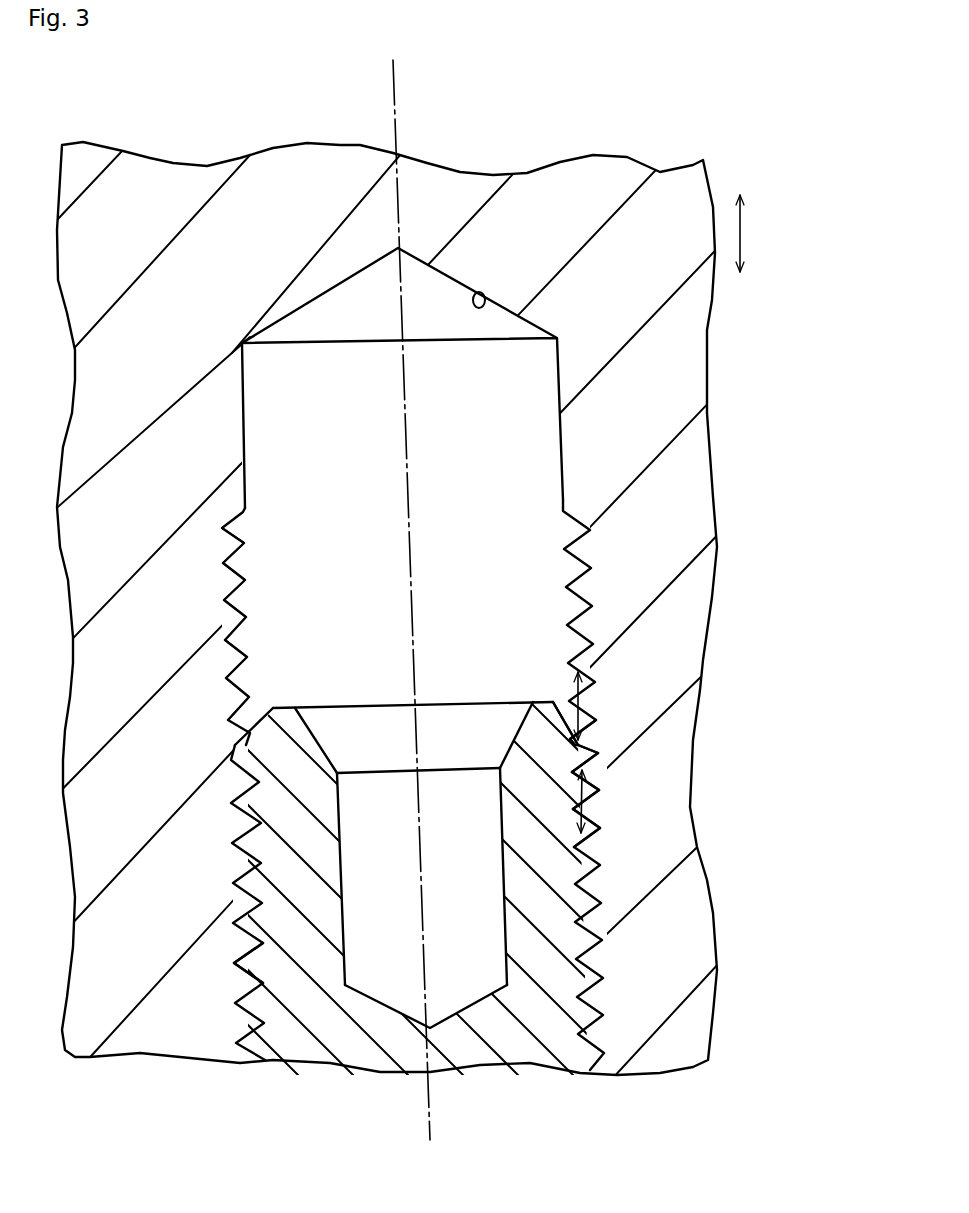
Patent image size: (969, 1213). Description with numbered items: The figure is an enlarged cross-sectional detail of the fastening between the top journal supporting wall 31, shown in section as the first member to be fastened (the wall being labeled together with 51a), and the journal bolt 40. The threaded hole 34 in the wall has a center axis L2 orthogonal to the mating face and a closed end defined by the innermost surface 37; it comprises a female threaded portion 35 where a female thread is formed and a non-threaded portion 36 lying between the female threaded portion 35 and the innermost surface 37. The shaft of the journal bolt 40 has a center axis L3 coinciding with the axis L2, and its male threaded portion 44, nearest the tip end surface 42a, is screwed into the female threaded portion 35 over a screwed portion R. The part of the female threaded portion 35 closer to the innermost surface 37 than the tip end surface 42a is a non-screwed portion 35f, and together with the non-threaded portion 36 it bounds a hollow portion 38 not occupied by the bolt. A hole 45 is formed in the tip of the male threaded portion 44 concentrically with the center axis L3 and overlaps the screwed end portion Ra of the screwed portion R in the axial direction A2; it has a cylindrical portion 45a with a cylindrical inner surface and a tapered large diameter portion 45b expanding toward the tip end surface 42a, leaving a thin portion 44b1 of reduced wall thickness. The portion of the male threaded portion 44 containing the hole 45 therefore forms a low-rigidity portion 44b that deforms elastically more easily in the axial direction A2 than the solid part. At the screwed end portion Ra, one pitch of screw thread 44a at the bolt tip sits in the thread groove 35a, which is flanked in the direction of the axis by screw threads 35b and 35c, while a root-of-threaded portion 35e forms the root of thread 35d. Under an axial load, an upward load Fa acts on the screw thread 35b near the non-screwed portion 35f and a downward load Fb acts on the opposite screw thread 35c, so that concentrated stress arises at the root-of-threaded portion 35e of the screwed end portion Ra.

The top journal supporting wall 31 is at (440, 612).
The housing wall 51a is at (625, 412).
The hollow portion 38 is at (485, 407).
The innermost surface 37 is at (479, 292).
The non-threaded portion 36 is at (250, 436).
The threaded hole 34 is at (545, 613).
The non-screwed portion 35f is at (256, 740).
The male threaded portion 44 is at (484, 692).
The journal bolt 40 is at (605, 900).
The tip end surface 42a is at (475, 705).
The large diameter portion 45b is at (322, 745).
The thin portion 44b1 is at (537, 737).
The hole 45 is at (390, 788).
The cylindrical portion 45a is at (347, 931).
The screw thread 44a is at (518, 790).
The low-rigidity portion 44b is at (312, 863).
The female threaded portion 35 is at (588, 853).
The screw thread 35b is at (600, 738).
The screwed end portion Ra is at (605, 740).
The root-of-threaded portion 35e is at (603, 752).
The root of thread 35d is at (603, 757).
The thread groove 35a is at (600, 758).
The screw thread 35c is at (603, 806).
The upward load Fa is at (617, 689).
The downward load Fb is at (515, 838).
The screwed portion R is at (240, 965).
The axial direction A2 is at (741, 228).
The center axis of threaded hole L2 is at (447, 587).
The center axis of shaft portion L3 is at (396, 62).